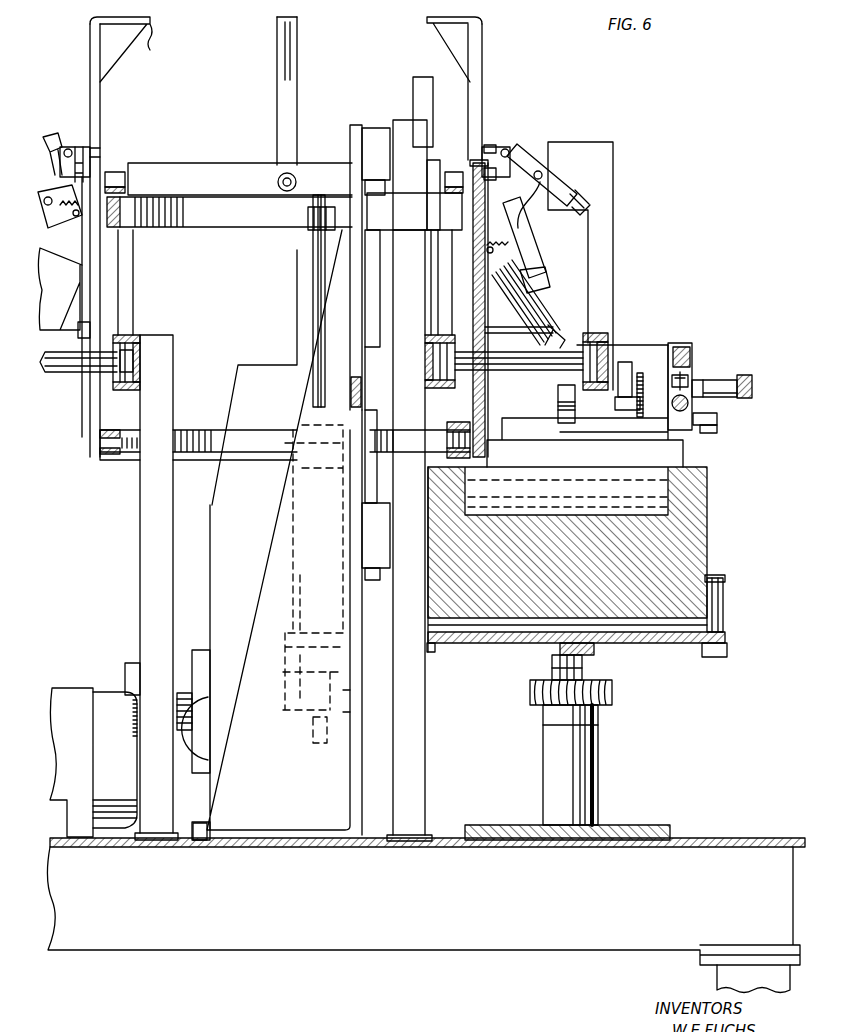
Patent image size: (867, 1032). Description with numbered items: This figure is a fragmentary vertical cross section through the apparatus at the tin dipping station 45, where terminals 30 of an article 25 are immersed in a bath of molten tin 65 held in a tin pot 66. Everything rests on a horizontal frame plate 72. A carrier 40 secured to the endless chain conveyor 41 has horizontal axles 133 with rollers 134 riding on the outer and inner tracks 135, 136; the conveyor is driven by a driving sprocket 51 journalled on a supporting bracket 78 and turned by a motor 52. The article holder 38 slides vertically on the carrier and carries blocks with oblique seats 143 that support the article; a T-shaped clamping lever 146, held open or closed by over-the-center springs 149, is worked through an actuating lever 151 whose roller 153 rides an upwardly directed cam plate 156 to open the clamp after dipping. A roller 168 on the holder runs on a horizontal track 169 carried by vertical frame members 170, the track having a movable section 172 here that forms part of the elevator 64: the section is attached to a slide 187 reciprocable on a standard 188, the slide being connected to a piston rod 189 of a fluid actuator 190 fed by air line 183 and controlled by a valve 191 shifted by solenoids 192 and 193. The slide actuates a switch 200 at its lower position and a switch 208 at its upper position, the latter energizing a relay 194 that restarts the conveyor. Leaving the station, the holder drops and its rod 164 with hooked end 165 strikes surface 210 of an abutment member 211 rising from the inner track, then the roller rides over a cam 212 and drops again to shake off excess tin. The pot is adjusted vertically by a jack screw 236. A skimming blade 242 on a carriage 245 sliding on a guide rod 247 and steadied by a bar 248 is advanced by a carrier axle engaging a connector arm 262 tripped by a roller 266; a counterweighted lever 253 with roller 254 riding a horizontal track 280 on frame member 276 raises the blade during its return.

The article 25 is at (548, 297).
The terminals 30 is at (556, 332).
The holder 38 is at (80, 145).
The carrier 40 is at (88, 465).
The endless chain conveyor 41 is at (125, 458).
The tin dipping station 45 is at (697, 232).
The driving sprocket 51 is at (222, 433).
The motor 52 is at (95, 690).
The elevator 64 is at (351, 140).
The molten tin bath 65 is at (662, 500).
The tin pot 66 is at (685, 540).
The frame plate 72 is at (720, 840).
The supporting bracket 78 is at (245, 400).
The axles 133 is at (70, 365).
The rollers 134 is at (125, 366).
The outer track 135 is at (606, 341).
The inner track 136 is at (140, 340).
The seats 143 is at (70, 272).
The clamping lever 146 is at (535, 256).
The over-the-center springs 149 is at (63, 220).
The actuating lever 151 is at (52, 165).
The roller 153 is at (580, 196).
The cam plate 156 is at (600, 178).
The rod 164 is at (100, 100).
The hooked end 165 is at (146, 28).
The roller 168 is at (118, 175).
The track 169 is at (200, 222).
The vertical frame members 170 is at (135, 298).
The movable track section 172 is at (445, 248).
The air line 183 is at (313, 740).
The slide 187 is at (380, 312).
The standard 188 is at (345, 772).
The piston rod 189 is at (290, 336).
The fluid actuator 190 is at (290, 625).
The valve 191 is at (352, 712).
The solenoid 192 is at (278, 700).
The solenoid 193 is at (352, 690).
The relay 194 is at (377, 482).
The switch 200 is at (375, 535).
The switch 208 is at (368, 135).
The surface 210 is at (418, 90).
The abutment member 211 is at (420, 130).
The cam 212 is at (442, 268).
The jack screw 236 is at (578, 672).
The skimming blade 242 is at (658, 460).
The carriage 245 is at (693, 370).
The guide rod 247 is at (689, 404).
The bar 248 is at (692, 350).
The counterweighted lever 253 is at (699, 430).
The roller 254 is at (717, 420).
The connector arm 262 is at (567, 425).
The roller 266 is at (623, 425).
The frame member 276 is at (753, 389).
The horizontal track 280 is at (742, 386).